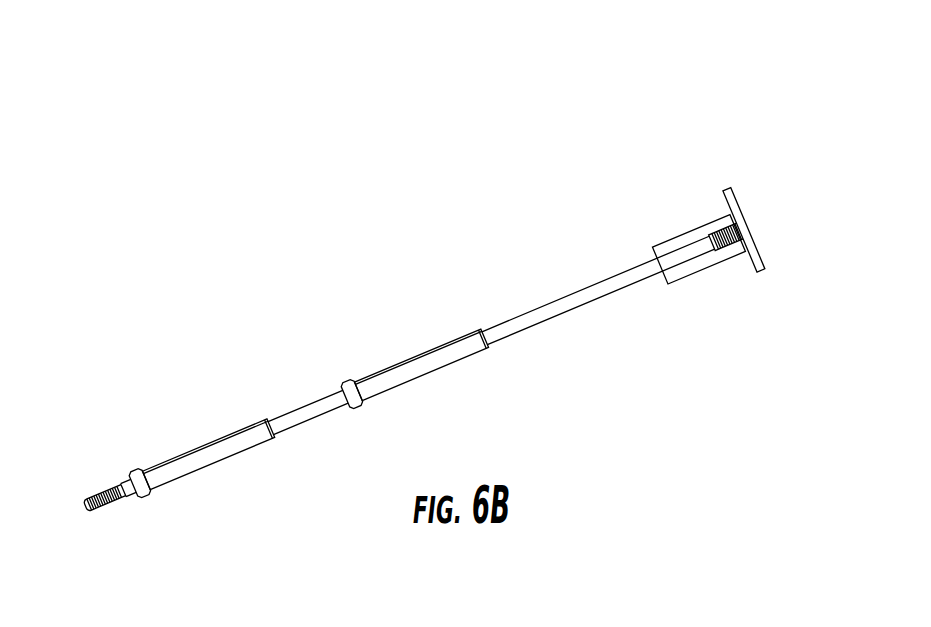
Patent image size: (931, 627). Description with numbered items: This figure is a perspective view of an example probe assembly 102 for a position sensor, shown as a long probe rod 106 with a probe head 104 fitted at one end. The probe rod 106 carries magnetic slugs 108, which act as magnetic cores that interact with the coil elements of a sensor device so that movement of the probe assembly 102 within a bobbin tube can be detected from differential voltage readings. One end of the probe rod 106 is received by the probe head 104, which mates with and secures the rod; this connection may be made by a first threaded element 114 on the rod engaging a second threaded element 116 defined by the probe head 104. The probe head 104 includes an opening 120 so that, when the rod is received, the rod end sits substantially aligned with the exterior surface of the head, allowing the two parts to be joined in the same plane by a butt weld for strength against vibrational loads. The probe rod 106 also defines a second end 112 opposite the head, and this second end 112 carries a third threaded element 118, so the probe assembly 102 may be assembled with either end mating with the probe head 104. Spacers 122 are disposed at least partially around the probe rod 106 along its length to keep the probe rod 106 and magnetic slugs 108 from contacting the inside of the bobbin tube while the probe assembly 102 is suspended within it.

The probe assembly 102 is at (777, 110).
The probe head 104 is at (654, 239).
The probe rod 106 is at (523, 317).
The magnetic slug 108 is at (186, 450).
The second end 112 is at (74, 508).
The first threaded element 114 is at (720, 250).
The second threaded element 116 is at (722, 223).
The third threaded element 118 is at (88, 492).
The opening 120 is at (752, 225).
The spacer 122 is at (128, 467).